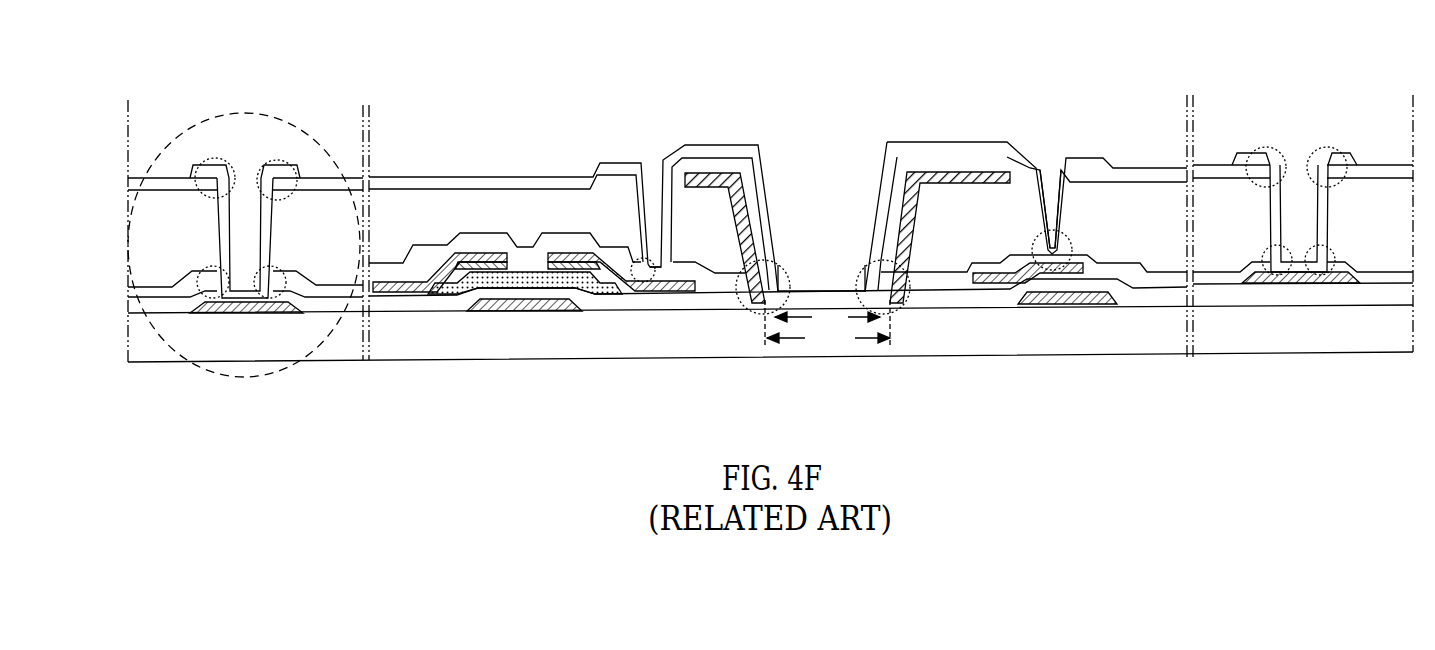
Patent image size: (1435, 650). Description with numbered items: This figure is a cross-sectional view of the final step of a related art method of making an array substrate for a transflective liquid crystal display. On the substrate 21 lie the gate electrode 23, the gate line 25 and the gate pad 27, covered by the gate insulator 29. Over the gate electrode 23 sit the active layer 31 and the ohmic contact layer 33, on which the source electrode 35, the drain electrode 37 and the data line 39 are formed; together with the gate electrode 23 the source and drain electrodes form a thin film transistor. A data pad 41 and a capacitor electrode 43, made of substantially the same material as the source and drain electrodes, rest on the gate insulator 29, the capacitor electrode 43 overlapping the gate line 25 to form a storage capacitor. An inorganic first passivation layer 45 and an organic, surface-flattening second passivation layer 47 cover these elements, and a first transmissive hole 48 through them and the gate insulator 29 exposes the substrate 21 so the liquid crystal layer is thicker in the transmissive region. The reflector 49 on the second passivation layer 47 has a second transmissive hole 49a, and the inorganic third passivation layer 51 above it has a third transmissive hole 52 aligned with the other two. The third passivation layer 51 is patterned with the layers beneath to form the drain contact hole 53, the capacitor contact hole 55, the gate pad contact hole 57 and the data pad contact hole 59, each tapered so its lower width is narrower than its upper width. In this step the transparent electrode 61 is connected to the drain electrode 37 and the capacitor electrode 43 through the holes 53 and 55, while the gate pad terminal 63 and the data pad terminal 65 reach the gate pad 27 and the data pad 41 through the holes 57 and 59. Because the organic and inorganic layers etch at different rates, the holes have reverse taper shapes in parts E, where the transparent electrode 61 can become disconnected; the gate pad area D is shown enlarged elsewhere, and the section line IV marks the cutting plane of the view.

The substrate 21 is at (542, 345).
The gate electrode 23 is at (498, 313).
The gate line 25 is at (1063, 305).
The gate pad 27 is at (253, 317).
The gate insulator 29 is at (345, 307).
The active layer 31 is at (515, 258).
The ohmic contact layer 33 is at (573, 255).
The source electrode 35 is at (473, 257).
The drain electrode 37 is at (595, 258).
The data line 39 is at (412, 262).
The data pad 41 is at (1288, 283).
The capacitor electrode 43 is at (985, 285).
The first passivation layer 45 is at (150, 290).
The second passivation layer 47 is at (190, 210).
The first transmissive hole 48 is at (830, 236).
The reflector 49 is at (967, 172).
The second transmissive hole 49a is at (827, 325).
The third passivation layer 51 is at (320, 183).
The third transmissive hole 52 is at (827, 317).
The drain contact hole 53 is at (656, 182).
The capacitor contact hole 55 is at (1052, 200).
The gate pad contact hole 57 is at (250, 230).
The data pad contact hole 59 is at (1302, 212).
The transparent electrode 61 is at (758, 148).
The gate pad terminal 63 is at (277, 167).
The data pad terminal 65 is at (1357, 153).
The gate pad area D is at (245, 113).
The reverse taper parts E is at (218, 160).
The section line IV is at (771, 249).